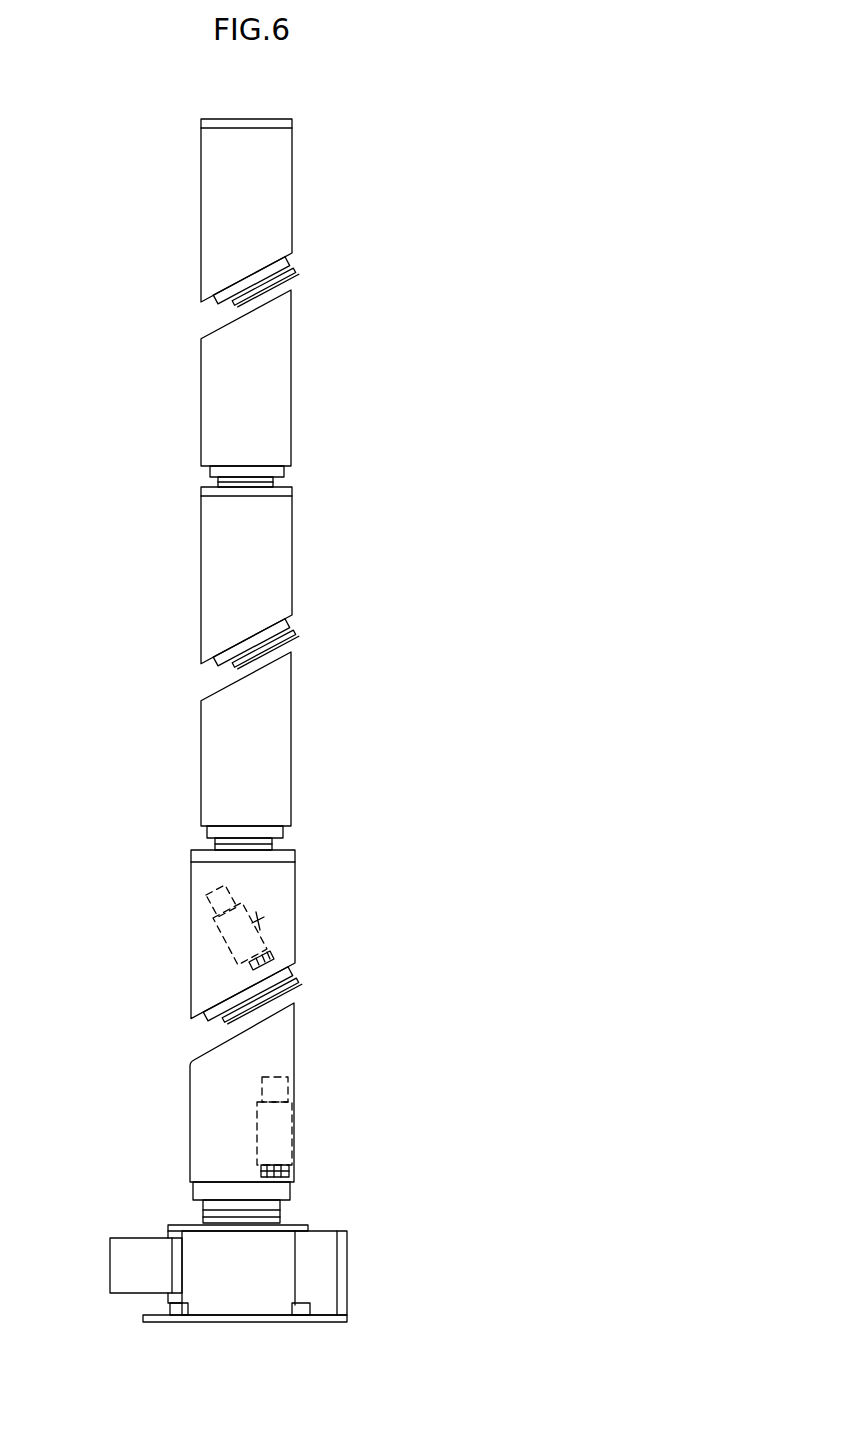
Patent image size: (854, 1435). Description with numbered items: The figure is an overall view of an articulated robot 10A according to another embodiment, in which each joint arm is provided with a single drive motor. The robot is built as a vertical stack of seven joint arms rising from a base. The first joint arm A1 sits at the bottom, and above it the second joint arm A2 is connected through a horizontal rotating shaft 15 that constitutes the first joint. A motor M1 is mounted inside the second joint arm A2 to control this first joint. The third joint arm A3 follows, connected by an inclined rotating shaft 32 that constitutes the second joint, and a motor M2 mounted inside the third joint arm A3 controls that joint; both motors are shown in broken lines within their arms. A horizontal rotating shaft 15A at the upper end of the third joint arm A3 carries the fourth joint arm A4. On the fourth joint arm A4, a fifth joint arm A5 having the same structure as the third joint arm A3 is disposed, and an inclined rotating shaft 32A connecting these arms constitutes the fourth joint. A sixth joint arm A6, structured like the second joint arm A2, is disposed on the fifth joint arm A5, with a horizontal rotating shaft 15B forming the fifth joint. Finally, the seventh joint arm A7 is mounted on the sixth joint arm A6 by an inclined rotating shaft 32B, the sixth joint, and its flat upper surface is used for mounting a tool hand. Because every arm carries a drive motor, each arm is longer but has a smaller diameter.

The articulated robot 10A is at (371, 152).
The seventh joint arm A7 is at (187, 198).
The sixth joint arm A6 is at (186, 393).
The fifth joint arm A5 is at (186, 543).
The fourth joint arm A4 is at (186, 757).
The third joint arm A3 is at (175, 938).
The second joint arm A2 is at (175, 1110).
The first joint arm A1 is at (366, 1266).
The inclined rotating shaft 32B is at (283, 287).
The inclined rotating shaft 32A is at (283, 655).
The inclined rotating shaft 32 is at (285, 1012).
The horizontal rotating shaft 15B is at (262, 487).
The horizontal rotating shaft 15A is at (272, 840).
The horizontal rotating shaft 15 is at (272, 1206).
The motor M2 is at (268, 930).
The motor M1 is at (282, 1133).